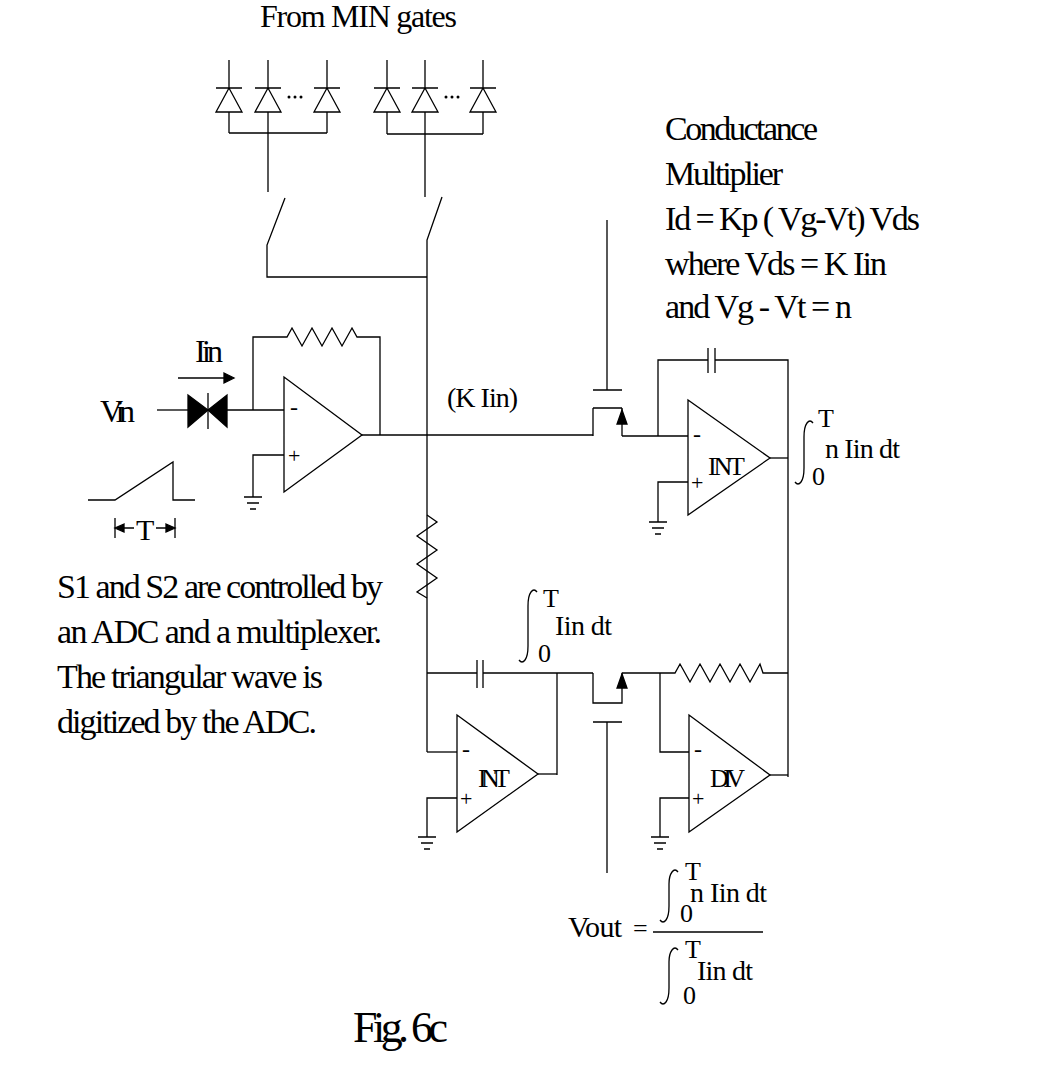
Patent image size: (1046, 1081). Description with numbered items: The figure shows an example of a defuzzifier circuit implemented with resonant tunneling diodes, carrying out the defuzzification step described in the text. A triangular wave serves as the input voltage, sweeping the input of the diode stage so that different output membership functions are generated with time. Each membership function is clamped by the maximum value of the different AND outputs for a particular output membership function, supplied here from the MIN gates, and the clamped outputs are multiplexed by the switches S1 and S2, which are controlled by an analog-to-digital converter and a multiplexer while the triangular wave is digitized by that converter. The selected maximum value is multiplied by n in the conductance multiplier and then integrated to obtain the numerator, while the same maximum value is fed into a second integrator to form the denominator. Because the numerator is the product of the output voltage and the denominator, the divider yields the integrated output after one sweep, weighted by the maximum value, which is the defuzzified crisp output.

The switch S1 is at (327, 235).
The switch S2 is at (417, 474).
The element n is at (610, 303).